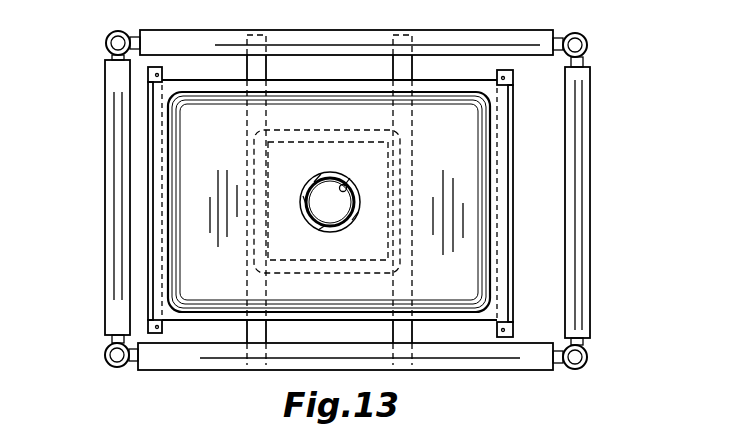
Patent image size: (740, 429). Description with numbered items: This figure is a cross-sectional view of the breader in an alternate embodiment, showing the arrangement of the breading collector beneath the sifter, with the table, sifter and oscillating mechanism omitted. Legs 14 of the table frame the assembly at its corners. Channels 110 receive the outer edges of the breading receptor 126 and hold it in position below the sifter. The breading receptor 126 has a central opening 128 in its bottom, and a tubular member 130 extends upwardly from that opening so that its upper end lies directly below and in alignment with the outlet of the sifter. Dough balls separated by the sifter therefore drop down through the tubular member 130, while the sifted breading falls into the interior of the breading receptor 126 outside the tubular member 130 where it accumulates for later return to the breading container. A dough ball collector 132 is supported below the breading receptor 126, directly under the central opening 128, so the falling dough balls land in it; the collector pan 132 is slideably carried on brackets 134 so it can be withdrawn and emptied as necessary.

The legs 14 is at (590, 38).
The channels 110 is at (148, 72).
The breading receptor 126 is at (440, 85).
The central opening 128 is at (345, 185).
The tubular member 130 is at (358, 214).
The dough ball collector 132 is at (256, 281).
The brackets 134 is at (247, 338).